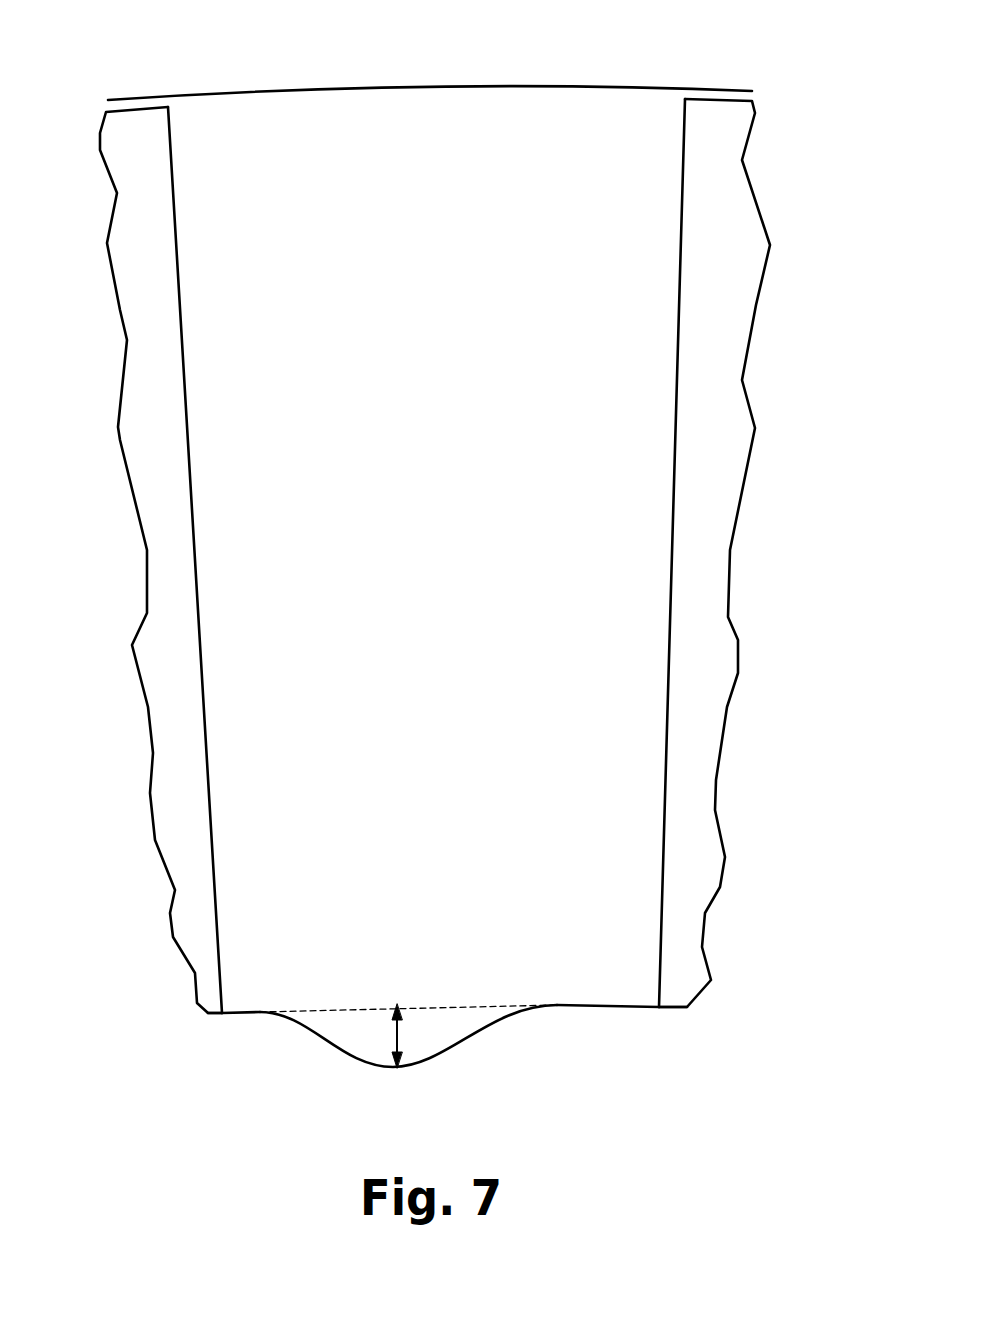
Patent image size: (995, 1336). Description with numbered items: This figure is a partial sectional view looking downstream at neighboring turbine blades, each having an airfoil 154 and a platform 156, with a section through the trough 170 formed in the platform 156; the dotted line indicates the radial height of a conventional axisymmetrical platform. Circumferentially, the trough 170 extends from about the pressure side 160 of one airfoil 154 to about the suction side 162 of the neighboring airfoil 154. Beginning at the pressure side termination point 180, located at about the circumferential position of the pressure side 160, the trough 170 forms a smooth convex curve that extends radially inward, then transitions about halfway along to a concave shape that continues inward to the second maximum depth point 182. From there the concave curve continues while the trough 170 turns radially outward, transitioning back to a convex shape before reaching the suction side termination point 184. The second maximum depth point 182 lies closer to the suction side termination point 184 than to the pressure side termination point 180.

The airfoil 154 is at (153, 307).
The platform 156 is at (284, 1071).
The pressure side 160 is at (677, 443).
The suction side 162 is at (188, 408).
The trough 170 is at (418, 1038).
The pressure side termination point 180 is at (663, 1010).
The second maximum depth point 182 is at (397, 1067).
The suction side termination point 184 is at (228, 1017).